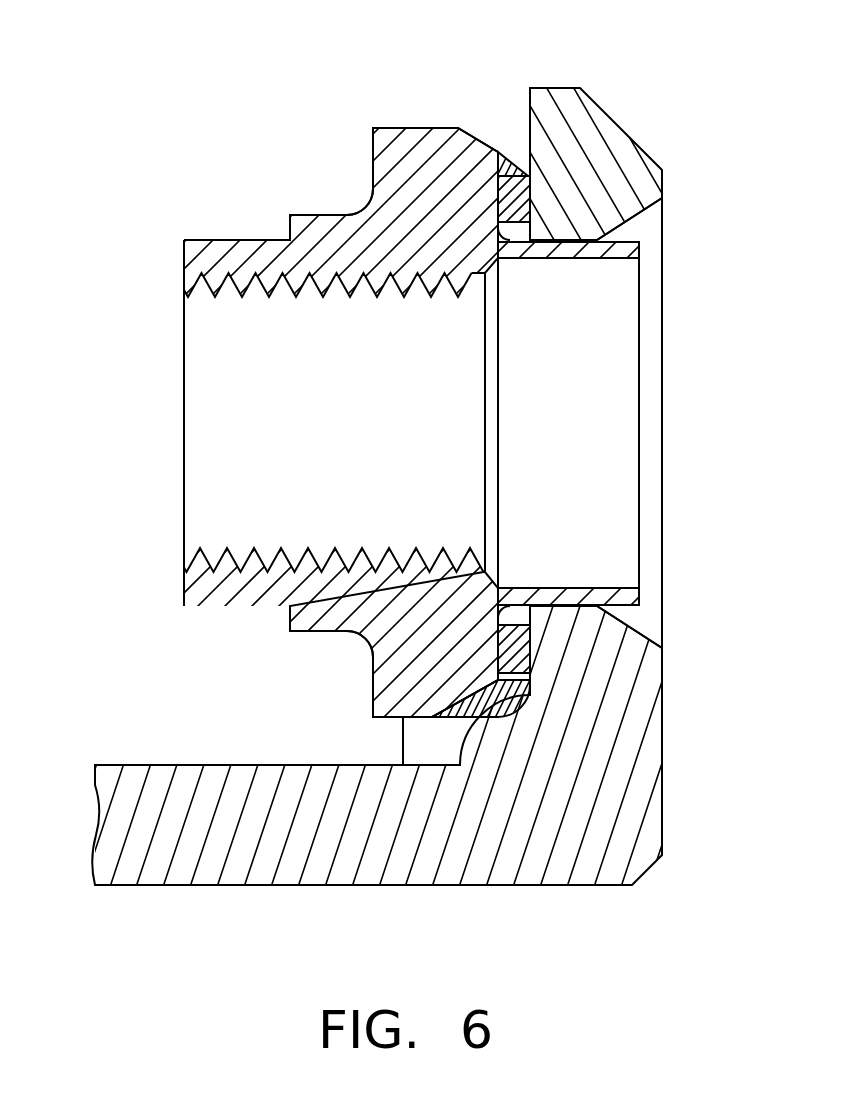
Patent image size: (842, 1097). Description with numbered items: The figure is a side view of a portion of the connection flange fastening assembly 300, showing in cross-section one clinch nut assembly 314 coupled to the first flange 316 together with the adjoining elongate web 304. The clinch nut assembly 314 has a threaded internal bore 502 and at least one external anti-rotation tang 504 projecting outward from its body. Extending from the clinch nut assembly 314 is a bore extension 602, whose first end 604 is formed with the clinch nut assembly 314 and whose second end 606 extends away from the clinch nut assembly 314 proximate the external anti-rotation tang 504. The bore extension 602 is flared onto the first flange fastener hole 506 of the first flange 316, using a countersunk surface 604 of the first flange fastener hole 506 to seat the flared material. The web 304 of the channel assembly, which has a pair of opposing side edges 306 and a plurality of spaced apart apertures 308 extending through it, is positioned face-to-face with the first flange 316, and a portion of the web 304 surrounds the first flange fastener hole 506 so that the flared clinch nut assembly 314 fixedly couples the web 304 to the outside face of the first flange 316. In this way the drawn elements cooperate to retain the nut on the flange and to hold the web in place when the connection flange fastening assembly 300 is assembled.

The connection flange fastening assembly 300 is at (190, 66).
The clinch nut assembly 314 is at (268, 198).
The external anti-rotation tang 504 is at (410, 140).
The threaded internal bore 502 is at (250, 555).
The side edges 306 is at (518, 150).
The first flange 316 is at (603, 108).
The first end 604 is at (662, 207).
The first flange fastener hole 506 is at (582, 251).
The bore extension 602 is at (623, 252).
The apertures 308 is at (506, 228).
The second end 606 is at (598, 566).
The web 304 is at (517, 648).